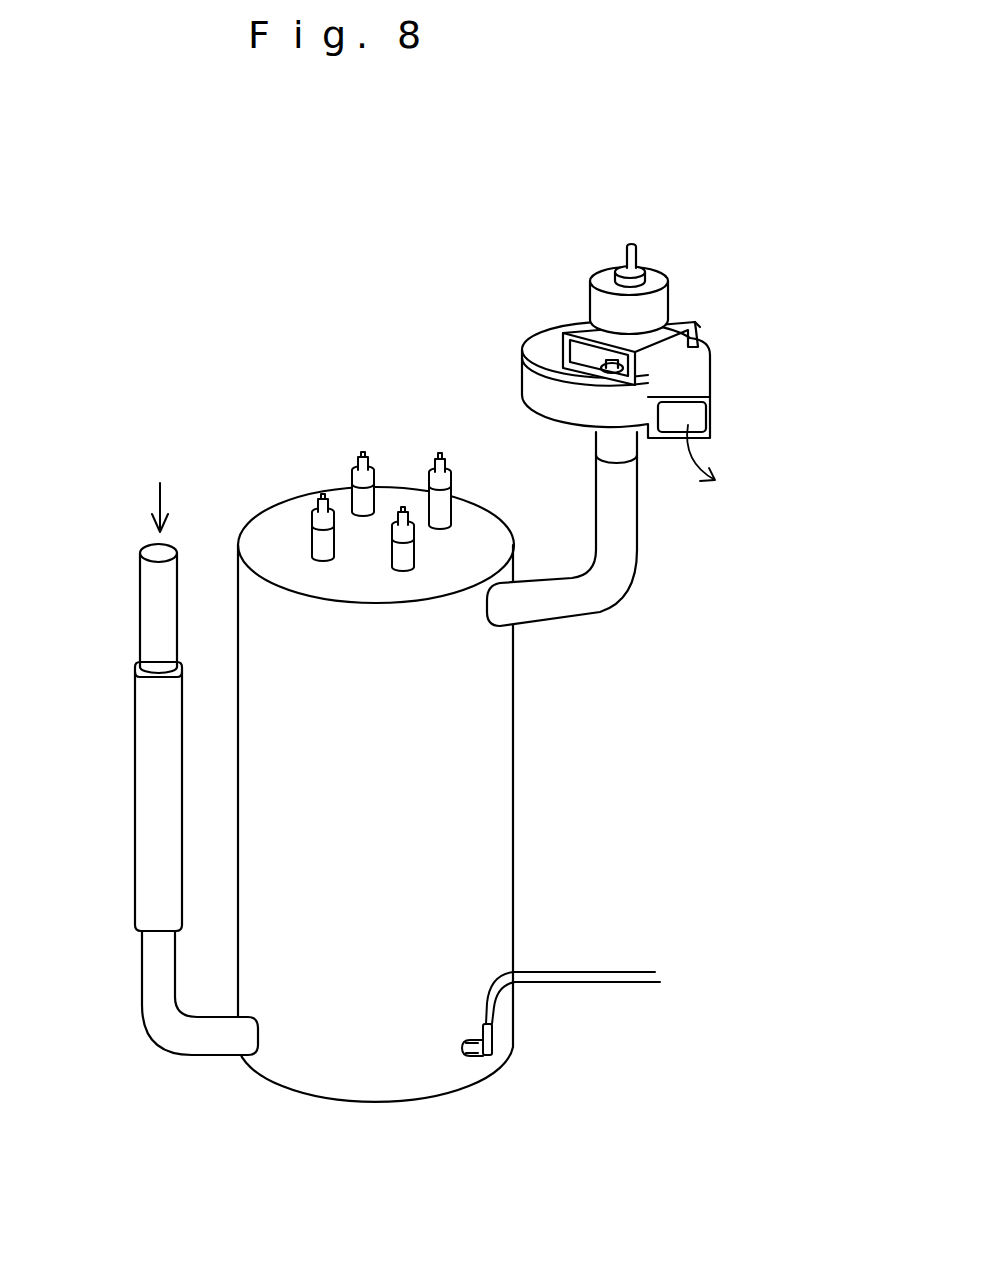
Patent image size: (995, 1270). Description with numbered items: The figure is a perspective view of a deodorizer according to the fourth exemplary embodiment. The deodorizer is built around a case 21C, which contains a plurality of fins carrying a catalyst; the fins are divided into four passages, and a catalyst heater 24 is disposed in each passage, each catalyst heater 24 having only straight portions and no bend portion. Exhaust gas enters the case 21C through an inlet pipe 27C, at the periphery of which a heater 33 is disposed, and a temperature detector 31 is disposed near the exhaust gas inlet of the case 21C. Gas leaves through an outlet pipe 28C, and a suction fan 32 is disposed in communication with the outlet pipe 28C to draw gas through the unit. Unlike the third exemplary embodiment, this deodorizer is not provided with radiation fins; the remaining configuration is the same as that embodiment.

The case 21C is at (513, 805).
The catalyst heater 24 is at (432, 483).
The inlet pipe 27C is at (157, 995).
The outlet pipe 28C is at (637, 552).
The temperature detector 31 is at (492, 1033).
The suction fan 32 is at (712, 370).
The heater 33 is at (148, 765).